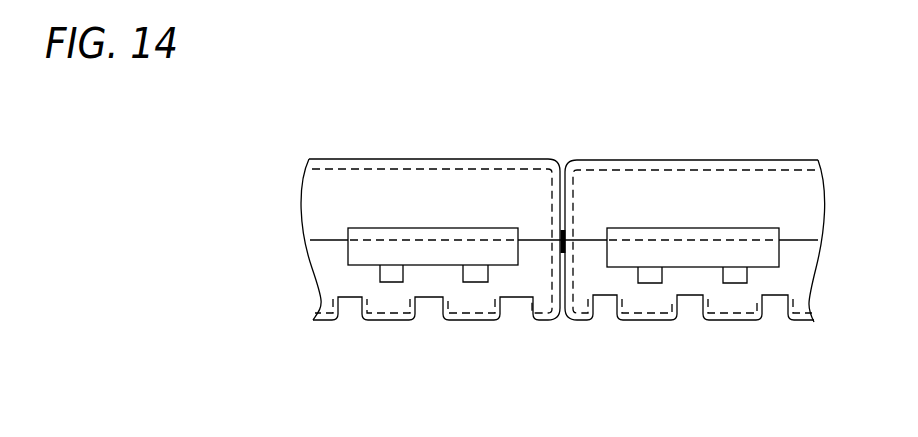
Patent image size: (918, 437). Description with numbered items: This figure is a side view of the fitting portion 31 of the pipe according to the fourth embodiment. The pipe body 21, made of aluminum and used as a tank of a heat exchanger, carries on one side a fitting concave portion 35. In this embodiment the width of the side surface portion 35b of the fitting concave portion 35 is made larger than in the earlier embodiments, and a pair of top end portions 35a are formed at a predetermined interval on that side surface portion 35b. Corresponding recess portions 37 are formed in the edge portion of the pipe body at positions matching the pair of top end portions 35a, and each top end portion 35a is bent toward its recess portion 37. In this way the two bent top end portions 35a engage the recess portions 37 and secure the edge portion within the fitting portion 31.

The pipe body 21 is at (668, 160).
The fitting portion 31 is at (462, 227).
The fitting concave portion 35 is at (370, 227).
The top end portions 35a is at (390, 273).
The side surface portion 35b is at (360, 252).
The recess portions 37 is at (458, 273).